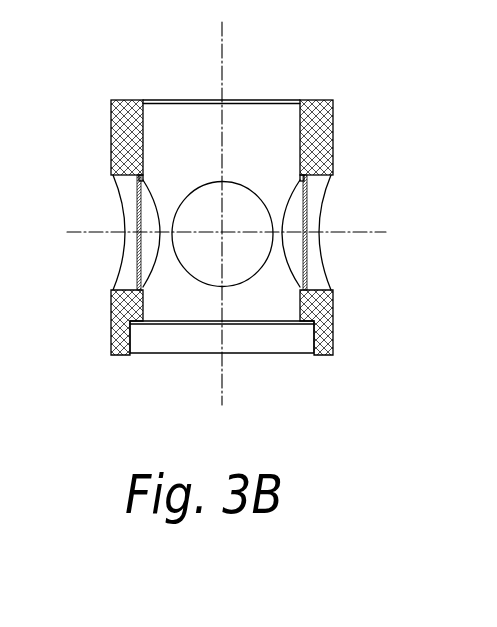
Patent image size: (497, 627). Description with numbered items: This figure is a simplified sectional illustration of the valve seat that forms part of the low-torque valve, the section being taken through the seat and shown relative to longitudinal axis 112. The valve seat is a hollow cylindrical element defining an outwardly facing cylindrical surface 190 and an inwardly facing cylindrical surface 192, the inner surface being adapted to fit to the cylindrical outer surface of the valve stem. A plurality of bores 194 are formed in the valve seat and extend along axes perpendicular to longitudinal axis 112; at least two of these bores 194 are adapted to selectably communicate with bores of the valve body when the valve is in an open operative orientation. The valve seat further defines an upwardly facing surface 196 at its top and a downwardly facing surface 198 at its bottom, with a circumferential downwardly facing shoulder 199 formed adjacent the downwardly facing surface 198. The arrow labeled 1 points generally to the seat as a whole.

The optical device 1 is at (419, 187).
The longitudinal axis 112 is at (222, 22).
The outwardly facing cylindrical surface 190 is at (334, 143).
The inwardly facing cylindrical surface 192 is at (300, 99).
The bores 194 is at (322, 270).
The upwardly facing surface 196 is at (124, 99).
The downwardly facing surface 198 is at (333, 356).
The circumferential downwardly facing shoulder 199 is at (137, 342).